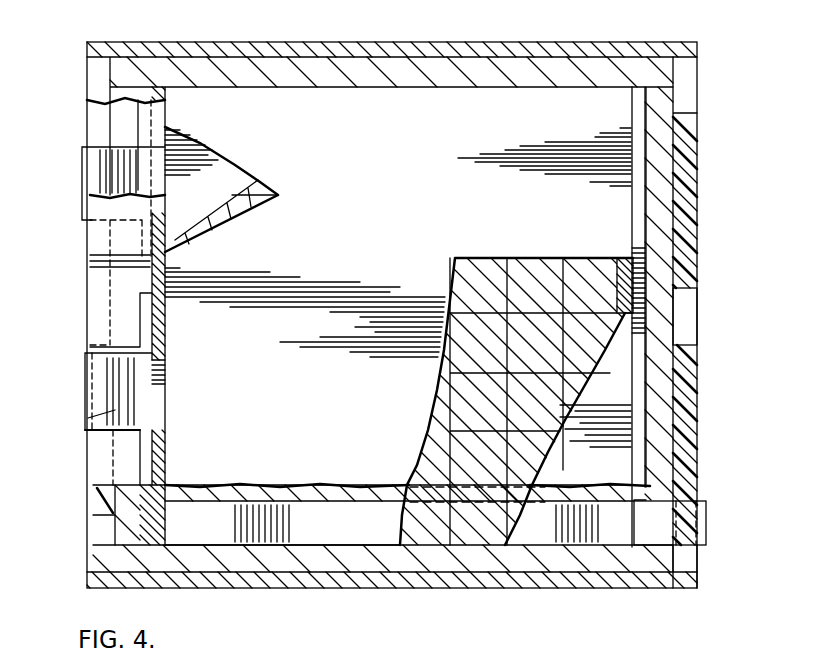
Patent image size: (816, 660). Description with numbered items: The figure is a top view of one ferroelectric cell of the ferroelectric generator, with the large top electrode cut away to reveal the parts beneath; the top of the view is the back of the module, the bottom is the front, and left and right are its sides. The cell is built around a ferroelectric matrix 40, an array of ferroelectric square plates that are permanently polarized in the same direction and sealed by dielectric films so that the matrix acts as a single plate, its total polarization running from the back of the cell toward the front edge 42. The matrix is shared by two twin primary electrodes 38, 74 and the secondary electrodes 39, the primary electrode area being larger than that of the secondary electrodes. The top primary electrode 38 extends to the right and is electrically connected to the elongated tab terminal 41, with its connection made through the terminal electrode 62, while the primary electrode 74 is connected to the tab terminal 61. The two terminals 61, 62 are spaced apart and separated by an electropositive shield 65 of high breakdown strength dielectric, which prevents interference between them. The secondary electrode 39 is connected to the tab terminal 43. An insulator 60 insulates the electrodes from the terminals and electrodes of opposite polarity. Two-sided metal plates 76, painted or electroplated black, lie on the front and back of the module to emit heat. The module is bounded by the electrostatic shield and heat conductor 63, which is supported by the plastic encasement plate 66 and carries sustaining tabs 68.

The primary electrode 38 is at (620, 360).
The secondary electrode 39 is at (323, 533).
The ferroelectric matrix 40 is at (283, 195).
The tab terminal 41 is at (640, 425).
The front edge 42 is at (520, 545).
The tab terminal 43 is at (668, 525).
The insulator 60 is at (160, 517).
The tab terminal 61 is at (115, 410).
The terminal electrode 62 is at (110, 170).
The electrostatic shield and heat conductor 63 is at (265, 570).
The electropositive shield 65 is at (115, 96).
The plastic encasement plate 66 is at (678, 122).
The sustaining tabs 68 is at (688, 305).
The primary electrode 74 is at (185, 153).
The two-sided metal plates 76 is at (590, 577).